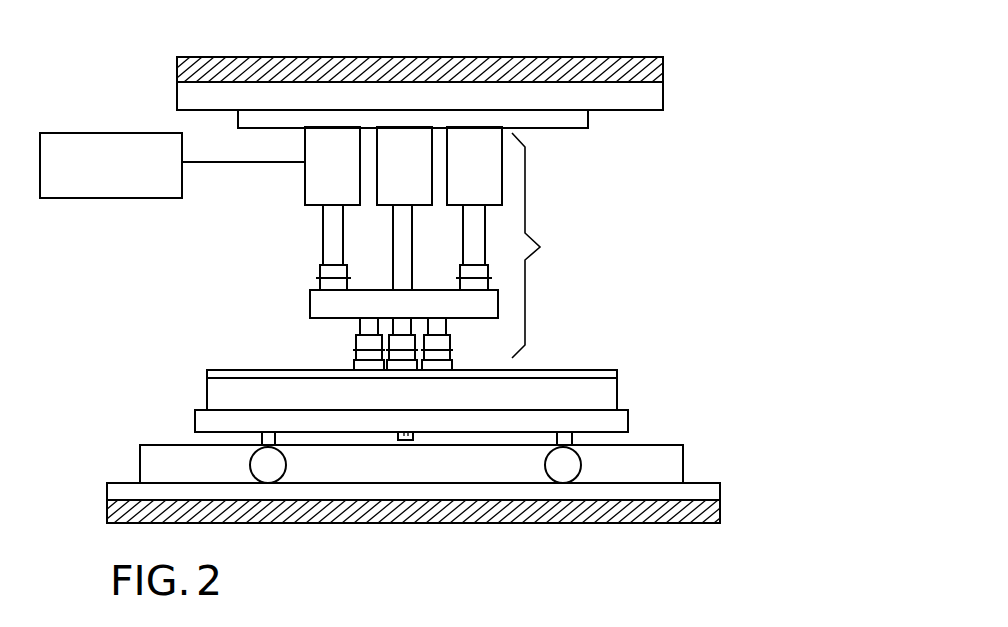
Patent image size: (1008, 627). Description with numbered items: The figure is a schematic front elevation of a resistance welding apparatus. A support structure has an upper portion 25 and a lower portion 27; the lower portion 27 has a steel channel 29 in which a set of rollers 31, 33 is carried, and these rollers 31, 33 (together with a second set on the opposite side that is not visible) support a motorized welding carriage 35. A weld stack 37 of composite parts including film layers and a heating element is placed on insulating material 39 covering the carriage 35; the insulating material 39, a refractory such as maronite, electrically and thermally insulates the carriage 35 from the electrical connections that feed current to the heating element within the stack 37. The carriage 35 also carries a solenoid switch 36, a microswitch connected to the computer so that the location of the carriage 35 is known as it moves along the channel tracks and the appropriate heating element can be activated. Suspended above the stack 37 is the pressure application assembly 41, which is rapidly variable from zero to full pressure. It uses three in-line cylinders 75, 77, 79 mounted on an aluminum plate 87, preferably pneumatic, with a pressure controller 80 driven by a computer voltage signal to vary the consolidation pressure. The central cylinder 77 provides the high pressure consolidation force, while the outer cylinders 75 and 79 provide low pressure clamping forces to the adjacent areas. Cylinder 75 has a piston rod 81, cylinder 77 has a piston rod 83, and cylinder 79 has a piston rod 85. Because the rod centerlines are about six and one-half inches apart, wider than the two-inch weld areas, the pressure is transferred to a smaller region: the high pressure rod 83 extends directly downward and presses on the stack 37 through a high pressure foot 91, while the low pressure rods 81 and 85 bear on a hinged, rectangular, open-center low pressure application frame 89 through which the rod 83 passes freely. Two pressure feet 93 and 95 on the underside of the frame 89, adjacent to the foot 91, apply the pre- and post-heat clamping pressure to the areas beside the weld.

The upper portion of support structure 25 is at (572, 50).
The lower portion of support structure 27 is at (662, 528).
The steel channel 29 is at (672, 457).
The roller 31 is at (280, 465).
The roller 33 is at (572, 463).
The motorized welding carriage 35 is at (623, 418).
The solenoid switch 36 is at (412, 440).
The weld stack 37 is at (238, 368).
The insulating material 39 is at (608, 383).
The pressure application assembly 41 is at (541, 245).
The cylinder 75 is at (315, 192).
The central pneumatic cylinder 77 is at (392, 190).
The cylinder 79 is at (495, 172).
The pressure controller 80 is at (112, 137).
The piston rod 81 is at (330, 240).
The piston rod 83 is at (407, 238).
The piston rod 85 is at (473, 230).
The aluminum plate 87 is at (572, 118).
The low pressure application frame 89 is at (482, 311).
The high pressure foot 91 is at (399, 353).
The pressure foot 93 is at (355, 342).
The pressure foot 95 is at (443, 343).